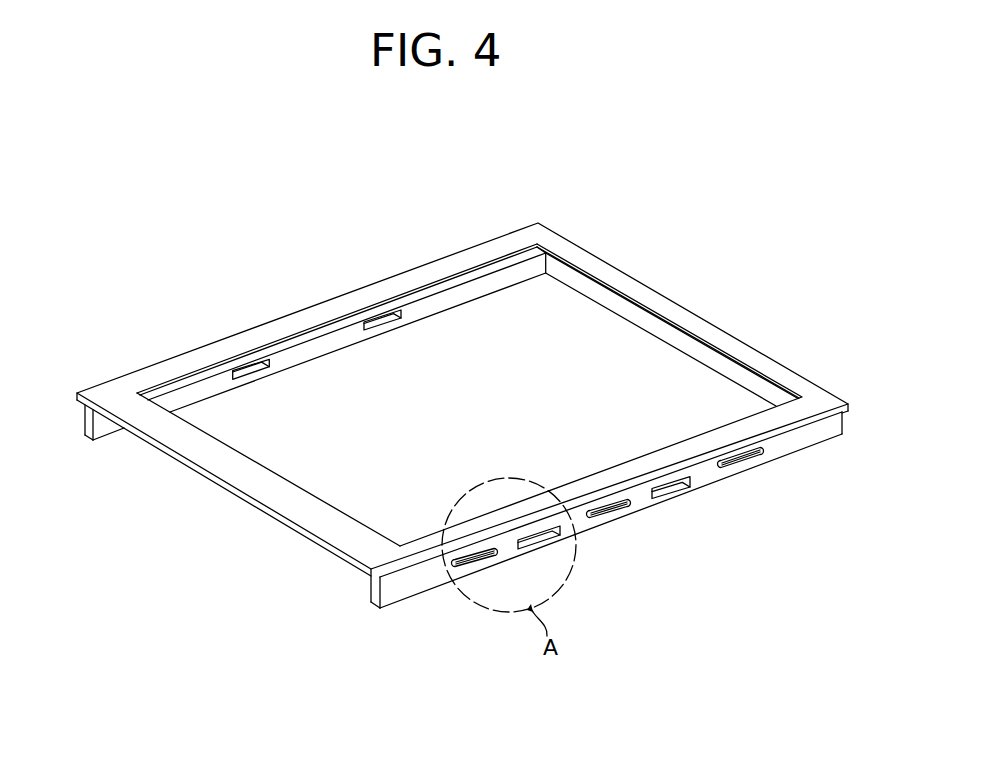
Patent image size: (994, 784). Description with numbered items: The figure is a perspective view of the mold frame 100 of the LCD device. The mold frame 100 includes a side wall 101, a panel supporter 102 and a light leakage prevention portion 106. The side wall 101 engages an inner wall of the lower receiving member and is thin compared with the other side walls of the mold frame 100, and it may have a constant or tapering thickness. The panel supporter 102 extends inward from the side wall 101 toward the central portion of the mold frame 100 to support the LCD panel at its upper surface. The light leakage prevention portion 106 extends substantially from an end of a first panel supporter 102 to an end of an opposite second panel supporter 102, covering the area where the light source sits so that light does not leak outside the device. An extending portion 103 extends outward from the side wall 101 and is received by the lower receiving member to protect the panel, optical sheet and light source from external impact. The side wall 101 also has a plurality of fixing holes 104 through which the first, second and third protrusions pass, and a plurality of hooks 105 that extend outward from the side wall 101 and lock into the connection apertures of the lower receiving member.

The mold frame 100 is at (803, 204).
The side wall 101 is at (407, 593).
The panel supporter 102 is at (325, 311).
The extending portion 103 is at (78, 410).
The fixing holes 104 is at (668, 492).
The hooks 105 is at (612, 514).
The light leakage prevention portion 106 is at (245, 483).